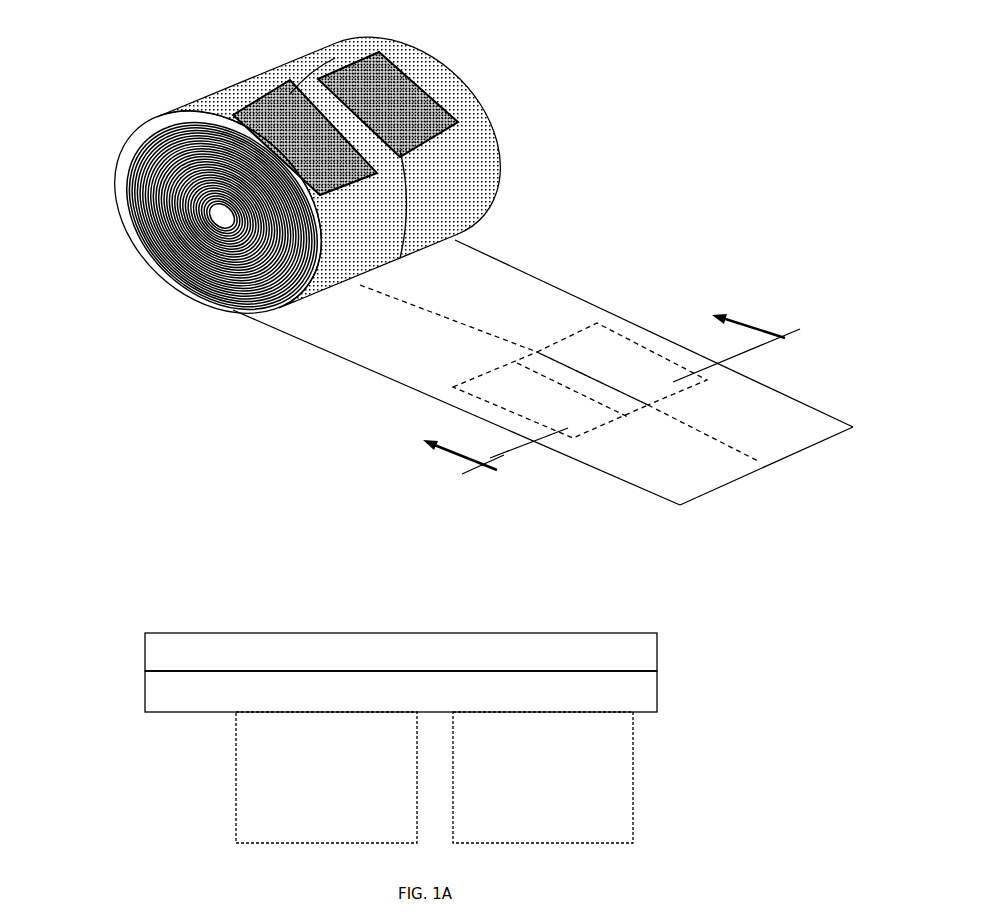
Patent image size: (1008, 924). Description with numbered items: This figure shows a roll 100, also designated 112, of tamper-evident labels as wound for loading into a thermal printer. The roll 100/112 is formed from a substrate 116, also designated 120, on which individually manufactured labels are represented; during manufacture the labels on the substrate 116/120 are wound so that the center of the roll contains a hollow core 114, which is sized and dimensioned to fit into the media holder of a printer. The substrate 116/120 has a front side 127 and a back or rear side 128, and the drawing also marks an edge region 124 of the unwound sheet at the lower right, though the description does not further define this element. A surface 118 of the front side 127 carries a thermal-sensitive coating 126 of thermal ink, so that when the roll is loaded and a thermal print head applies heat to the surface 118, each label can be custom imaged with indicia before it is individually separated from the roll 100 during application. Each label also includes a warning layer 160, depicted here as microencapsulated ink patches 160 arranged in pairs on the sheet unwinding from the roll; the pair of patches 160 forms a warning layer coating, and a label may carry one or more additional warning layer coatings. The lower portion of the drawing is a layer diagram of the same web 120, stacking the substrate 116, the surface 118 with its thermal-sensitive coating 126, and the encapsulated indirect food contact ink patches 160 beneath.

The roll 100 is at (614, 76).
The roll 112 is at (380, 40).
The hollow core 114 is at (118, 186).
The substrate 116 is at (160, 655).
The surface 118 is at (650, 669).
The substrate 120 is at (333, 330).
The sheet edge 124 is at (766, 477).
The thermal-sensitive coating 126 is at (250, 85).
The front side 127 is at (326, 52).
The rear side 128 is at (793, 418).
The warning layer 160 is at (452, 141).